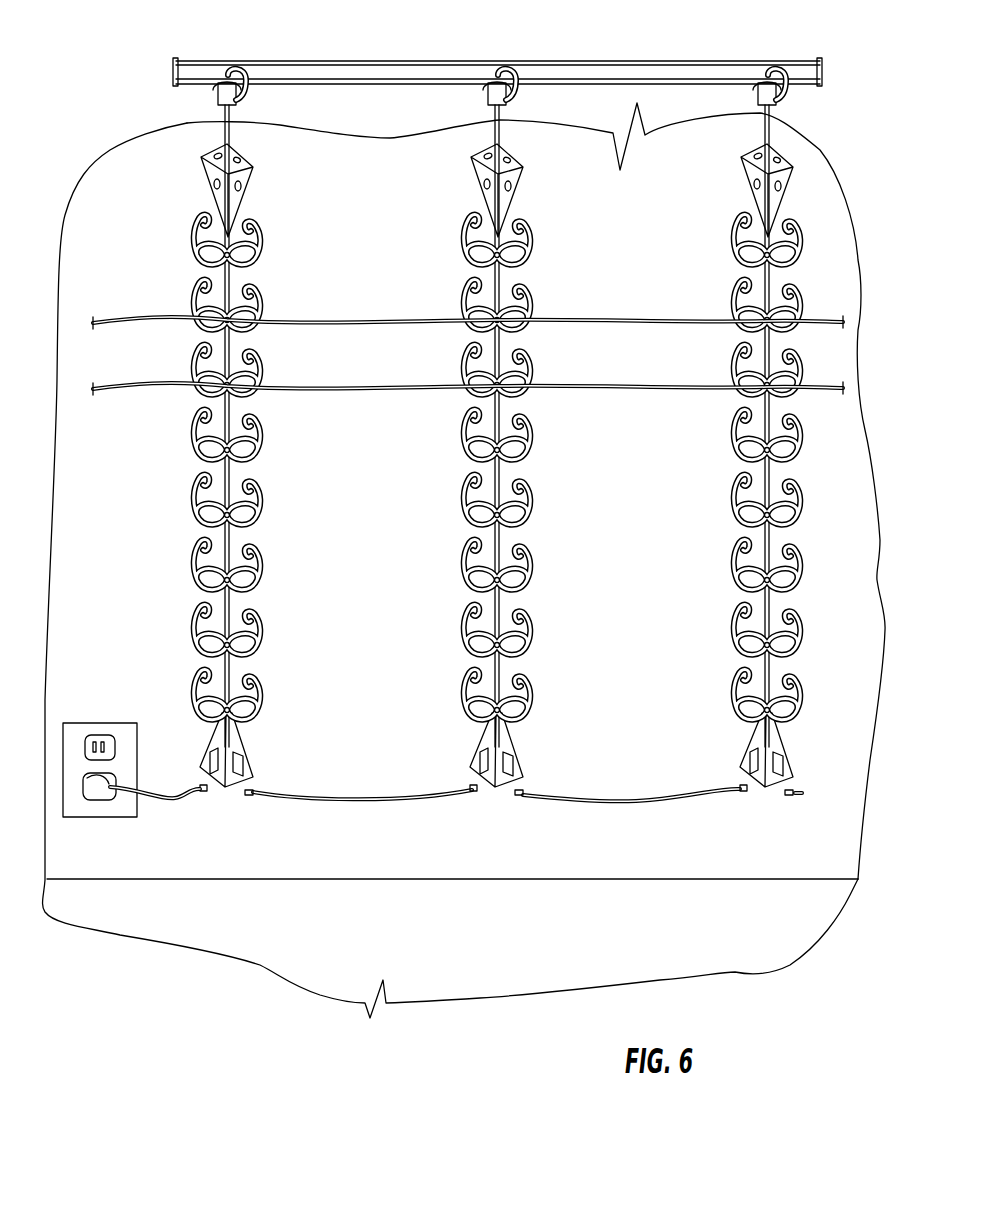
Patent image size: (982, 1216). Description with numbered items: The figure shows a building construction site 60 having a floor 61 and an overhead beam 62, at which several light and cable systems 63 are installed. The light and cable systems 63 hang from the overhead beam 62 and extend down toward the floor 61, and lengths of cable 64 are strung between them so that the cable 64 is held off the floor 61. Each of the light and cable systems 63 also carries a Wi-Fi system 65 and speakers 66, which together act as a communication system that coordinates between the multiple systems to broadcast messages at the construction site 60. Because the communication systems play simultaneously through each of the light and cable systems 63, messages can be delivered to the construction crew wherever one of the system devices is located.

The construction site 60 is at (113, 856).
The floor 61 is at (334, 929).
The overhead beam 62 is at (373, 75).
The light and cable systems 63 is at (762, 537).
The cable 64 is at (373, 385).
The Wi-Fi system 65 is at (762, 188).
The speakers 66 is at (753, 212).